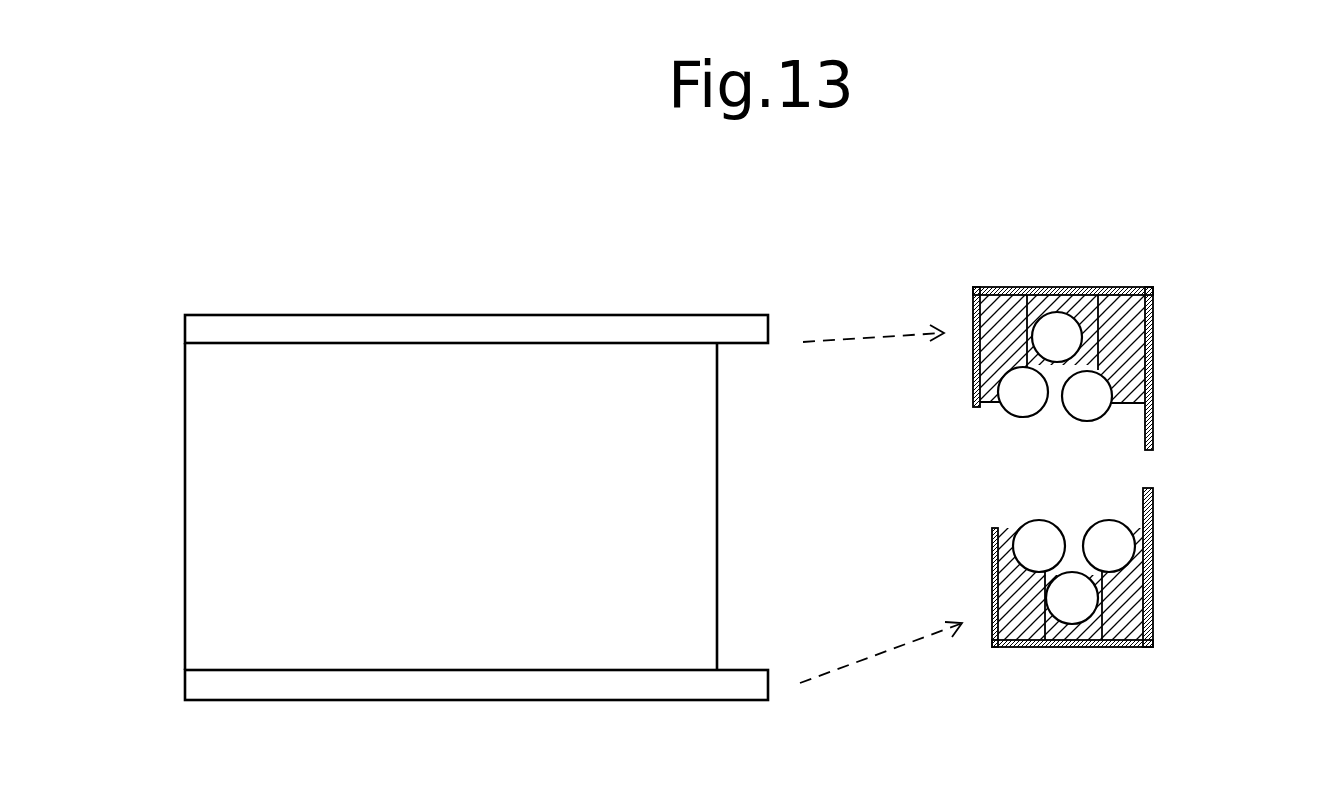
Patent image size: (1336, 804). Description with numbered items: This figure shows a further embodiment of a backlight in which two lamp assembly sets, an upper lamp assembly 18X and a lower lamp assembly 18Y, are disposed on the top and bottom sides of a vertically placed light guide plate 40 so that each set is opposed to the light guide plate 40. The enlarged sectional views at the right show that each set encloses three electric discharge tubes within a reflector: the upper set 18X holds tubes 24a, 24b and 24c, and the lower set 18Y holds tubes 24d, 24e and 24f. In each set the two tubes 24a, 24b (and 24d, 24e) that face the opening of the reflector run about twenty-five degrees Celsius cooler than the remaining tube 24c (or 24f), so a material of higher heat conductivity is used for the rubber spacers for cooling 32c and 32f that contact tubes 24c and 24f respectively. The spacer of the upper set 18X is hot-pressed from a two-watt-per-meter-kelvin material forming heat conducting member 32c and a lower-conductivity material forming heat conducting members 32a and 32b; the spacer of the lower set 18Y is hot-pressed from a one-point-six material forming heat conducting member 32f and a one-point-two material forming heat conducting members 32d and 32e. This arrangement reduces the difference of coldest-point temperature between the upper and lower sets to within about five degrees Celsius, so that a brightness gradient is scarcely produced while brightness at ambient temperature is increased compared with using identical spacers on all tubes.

The light guide plate 40 is at (558, 383).
The lamp assembly 18X is at (686, 332).
The lamp assembly 18Y is at (597, 685).
The electric discharge tube 24a is at (1023, 392).
The electric discharge tube 24b is at (1087, 396).
The electric discharge tube 24c is at (1063, 338).
The electric discharge tube 24d is at (1105, 532).
The electric discharge tube 24e is at (1045, 550).
The electric discharge tube 24f is at (1077, 600).
The heat conducting member 32a is at (1010, 357).
The heat conducting member 32b is at (1118, 322).
The rubber spacer for cooling 32c is at (1075, 305).
The heat conducting member 32d is at (1123, 632).
The heat conducting member 32e is at (1018, 612).
The rubber spacer for cooling 32f is at (1062, 630).